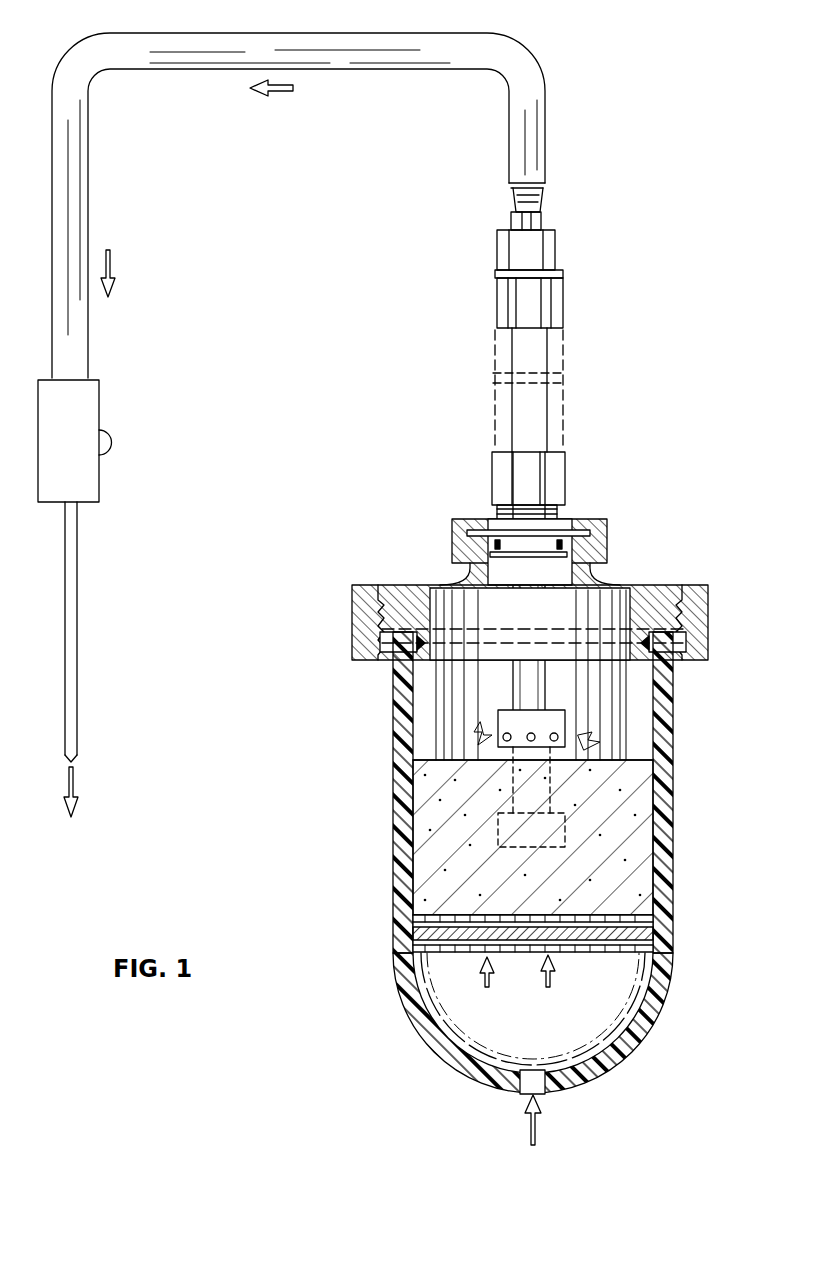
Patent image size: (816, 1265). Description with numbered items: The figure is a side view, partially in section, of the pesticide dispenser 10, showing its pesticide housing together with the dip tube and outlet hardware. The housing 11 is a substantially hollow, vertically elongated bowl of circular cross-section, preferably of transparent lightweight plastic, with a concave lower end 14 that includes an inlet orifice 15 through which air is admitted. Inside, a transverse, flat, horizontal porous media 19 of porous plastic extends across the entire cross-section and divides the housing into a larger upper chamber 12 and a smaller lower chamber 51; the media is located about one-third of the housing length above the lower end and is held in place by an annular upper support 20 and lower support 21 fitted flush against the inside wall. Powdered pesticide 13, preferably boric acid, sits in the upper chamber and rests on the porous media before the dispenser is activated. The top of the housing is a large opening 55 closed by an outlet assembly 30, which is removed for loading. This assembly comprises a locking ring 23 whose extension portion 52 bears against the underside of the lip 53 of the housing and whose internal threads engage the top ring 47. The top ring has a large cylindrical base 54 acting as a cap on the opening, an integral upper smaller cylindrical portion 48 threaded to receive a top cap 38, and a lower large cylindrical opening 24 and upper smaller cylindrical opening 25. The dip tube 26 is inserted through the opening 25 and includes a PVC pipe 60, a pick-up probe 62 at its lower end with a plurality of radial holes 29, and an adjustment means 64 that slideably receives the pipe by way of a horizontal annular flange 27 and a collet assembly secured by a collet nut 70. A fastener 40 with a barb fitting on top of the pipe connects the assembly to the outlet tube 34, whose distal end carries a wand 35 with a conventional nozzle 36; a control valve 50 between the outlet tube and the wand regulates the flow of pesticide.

The pesticide dispenser 10 is at (628, 75).
The housing 11 is at (393, 838).
The upper chamber 12 is at (430, 728).
The pesticide 13 is at (635, 827).
The lower end 14 is at (650, 1033).
The inlet orifice 15 is at (537, 1091).
The porous media 19 is at (653, 933).
The upper support 20 is at (536, 913).
The lower support 21 is at (533, 946).
The locking ring 23 is at (356, 627).
The lower large cylindrical opening 24 is at (426, 584).
The upper smaller cylindrical opening 25 is at (458, 582).
The dip tube 26 is at (583, 408).
The annular flange 27 is at (489, 526).
The radial holes 29 is at (500, 748).
The outlet assembly 30 is at (403, 519).
The outlet tube 34 is at (362, 33).
The wand 35 is at (77, 630).
The nozzle 36 is at (78, 758).
The top cap 38 is at (587, 528).
The fastener 40 is at (546, 226).
The top ring 47 is at (606, 575).
The upper smaller cylindrical portion 48 is at (593, 555).
The control valve 50 is at (93, 408).
The lower chamber 51 is at (457, 1038).
The extension portion 52 is at (376, 662).
The lip 53 is at (676, 663).
The large cylindrical base 54 is at (659, 584).
The opening 55 is at (593, 643).
The pipe 60 is at (547, 443).
The pick-up probe 62 is at (527, 731).
The adjustment means 64 is at (453, 460).
The collet nut 70 is at (560, 486).